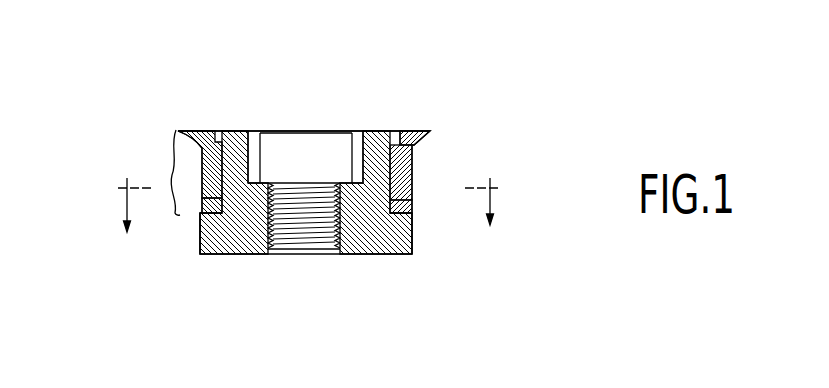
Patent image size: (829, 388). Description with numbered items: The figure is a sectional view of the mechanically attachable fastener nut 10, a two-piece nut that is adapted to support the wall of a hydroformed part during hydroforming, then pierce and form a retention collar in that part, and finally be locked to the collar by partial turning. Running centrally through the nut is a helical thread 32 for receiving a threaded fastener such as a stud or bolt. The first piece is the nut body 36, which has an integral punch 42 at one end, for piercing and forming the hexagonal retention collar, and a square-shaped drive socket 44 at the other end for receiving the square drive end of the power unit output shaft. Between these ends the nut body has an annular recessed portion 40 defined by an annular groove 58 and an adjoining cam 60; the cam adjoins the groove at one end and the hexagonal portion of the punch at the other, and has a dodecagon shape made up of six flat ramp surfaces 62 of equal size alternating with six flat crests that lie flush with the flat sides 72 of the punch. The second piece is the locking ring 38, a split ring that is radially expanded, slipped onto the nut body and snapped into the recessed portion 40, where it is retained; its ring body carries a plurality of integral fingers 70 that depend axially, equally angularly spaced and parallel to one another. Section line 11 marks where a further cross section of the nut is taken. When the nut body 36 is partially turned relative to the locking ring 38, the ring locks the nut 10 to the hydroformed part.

The fastener nut 10 is at (392, 117).
The section line 11 is at (309, 202).
The helical thread 32 is at (277, 234).
The nut body 36 is at (233, 128).
The locking ring 38 is at (195, 128).
The annular recessed portion 40 is at (172, 170).
The integral punch 42 is at (413, 240).
The drive socket 44 is at (249, 163).
The annular groove 58 is at (413, 157).
The cam 60 is at (412, 188).
The flat ramp surfaces 62 is at (202, 200).
The fingers 70 is at (222, 199).
The flat sides 72 is at (200, 238).